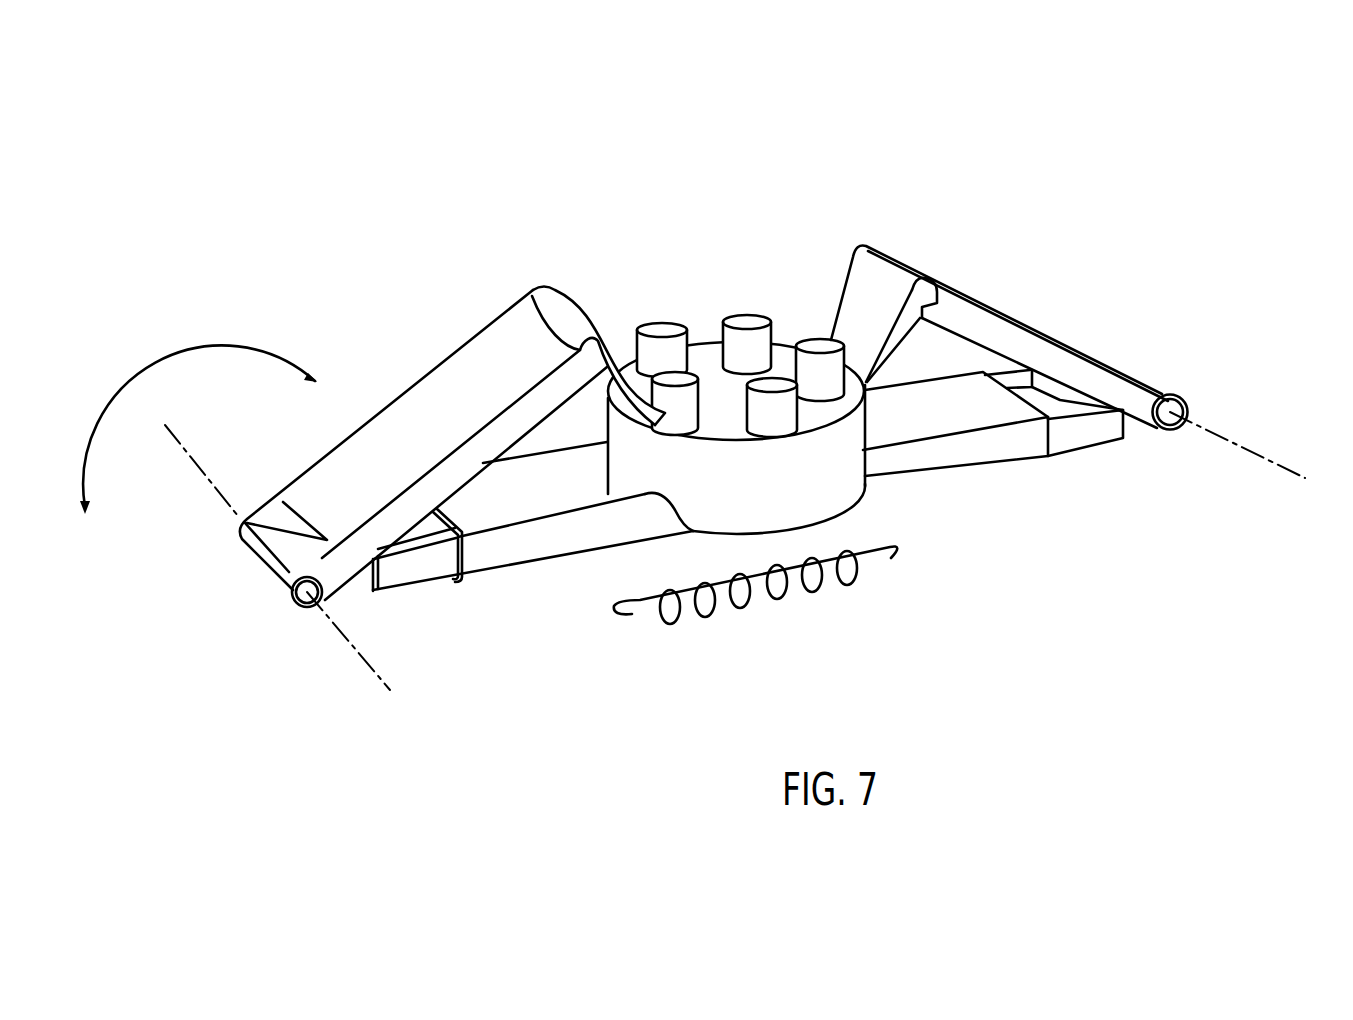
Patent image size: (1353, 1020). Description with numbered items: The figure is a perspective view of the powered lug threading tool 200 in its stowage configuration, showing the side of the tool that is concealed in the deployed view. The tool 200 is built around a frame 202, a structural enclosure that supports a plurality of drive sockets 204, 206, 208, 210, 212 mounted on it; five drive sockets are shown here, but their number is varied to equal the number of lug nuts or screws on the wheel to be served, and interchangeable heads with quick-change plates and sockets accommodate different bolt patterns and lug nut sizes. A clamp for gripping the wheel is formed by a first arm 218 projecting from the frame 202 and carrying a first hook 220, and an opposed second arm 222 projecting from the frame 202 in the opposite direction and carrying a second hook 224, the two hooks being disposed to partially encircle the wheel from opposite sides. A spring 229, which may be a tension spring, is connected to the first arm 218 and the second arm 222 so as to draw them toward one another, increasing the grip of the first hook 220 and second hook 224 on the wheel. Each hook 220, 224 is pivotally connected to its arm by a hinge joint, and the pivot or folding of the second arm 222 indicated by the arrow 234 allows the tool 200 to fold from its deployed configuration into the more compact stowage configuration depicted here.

The powered lug threading tool 200 is at (940, 124).
The frame 202 is at (910, 514).
The drive socket 204 is at (690, 420).
The drive socket 206 is at (662, 340).
The drive socket 208 is at (748, 328).
The drive socket 210 is at (820, 350).
The drive socket 212 is at (768, 425).
The first arm 218 is at (1105, 474).
The first hook 220 is at (1062, 285).
The second arm 222 is at (514, 622).
The second hook 224 is at (513, 250).
The spring 229 is at (712, 614).
The arrow 234 is at (175, 357).